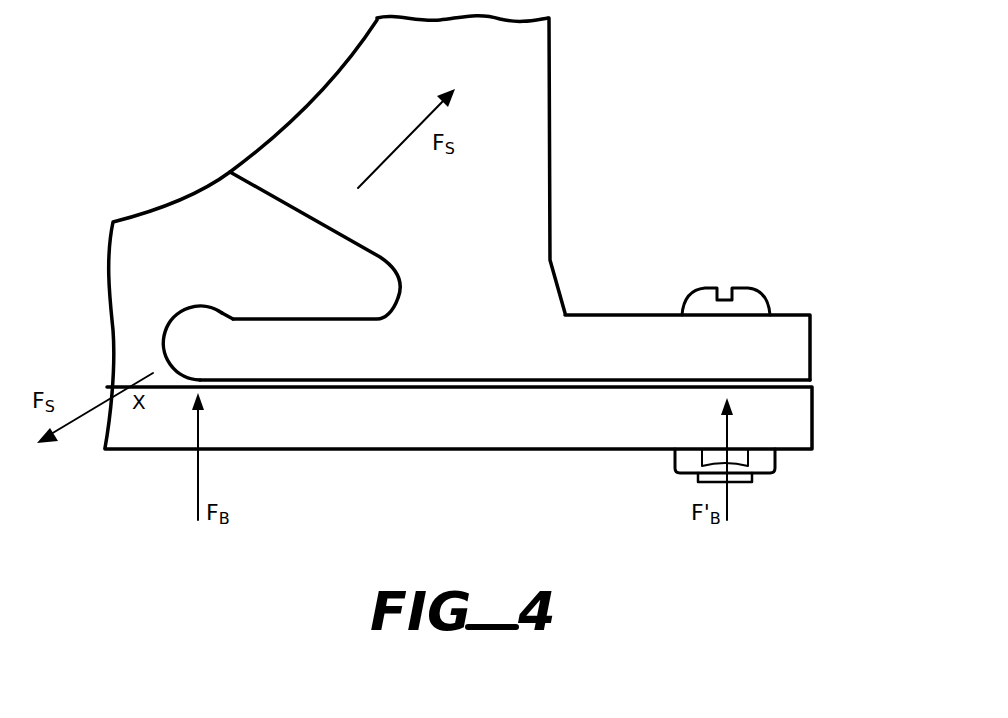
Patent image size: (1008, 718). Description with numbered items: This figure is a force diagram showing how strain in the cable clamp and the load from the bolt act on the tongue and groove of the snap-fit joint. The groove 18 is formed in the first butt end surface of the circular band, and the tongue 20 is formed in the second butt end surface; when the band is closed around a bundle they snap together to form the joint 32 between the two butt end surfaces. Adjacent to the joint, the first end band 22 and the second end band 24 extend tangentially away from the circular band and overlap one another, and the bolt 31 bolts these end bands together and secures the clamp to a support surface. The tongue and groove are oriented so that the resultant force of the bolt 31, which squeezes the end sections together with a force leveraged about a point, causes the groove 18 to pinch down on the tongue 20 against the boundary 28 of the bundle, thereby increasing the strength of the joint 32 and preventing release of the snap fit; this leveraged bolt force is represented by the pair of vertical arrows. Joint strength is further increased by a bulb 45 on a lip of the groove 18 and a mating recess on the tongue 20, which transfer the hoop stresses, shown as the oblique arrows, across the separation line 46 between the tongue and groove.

The groove 18 is at (368, 352).
The tongue 20 is at (357, 275).
The first end band 22 is at (778, 343).
The second end band 24 is at (777, 410).
The boundary of the bundle 28 is at (356, 70).
The bolt 31 is at (707, 302).
The joint 32 is at (199, 166).
The bulb 45 is at (170, 312).
The separation line 46 is at (217, 323).